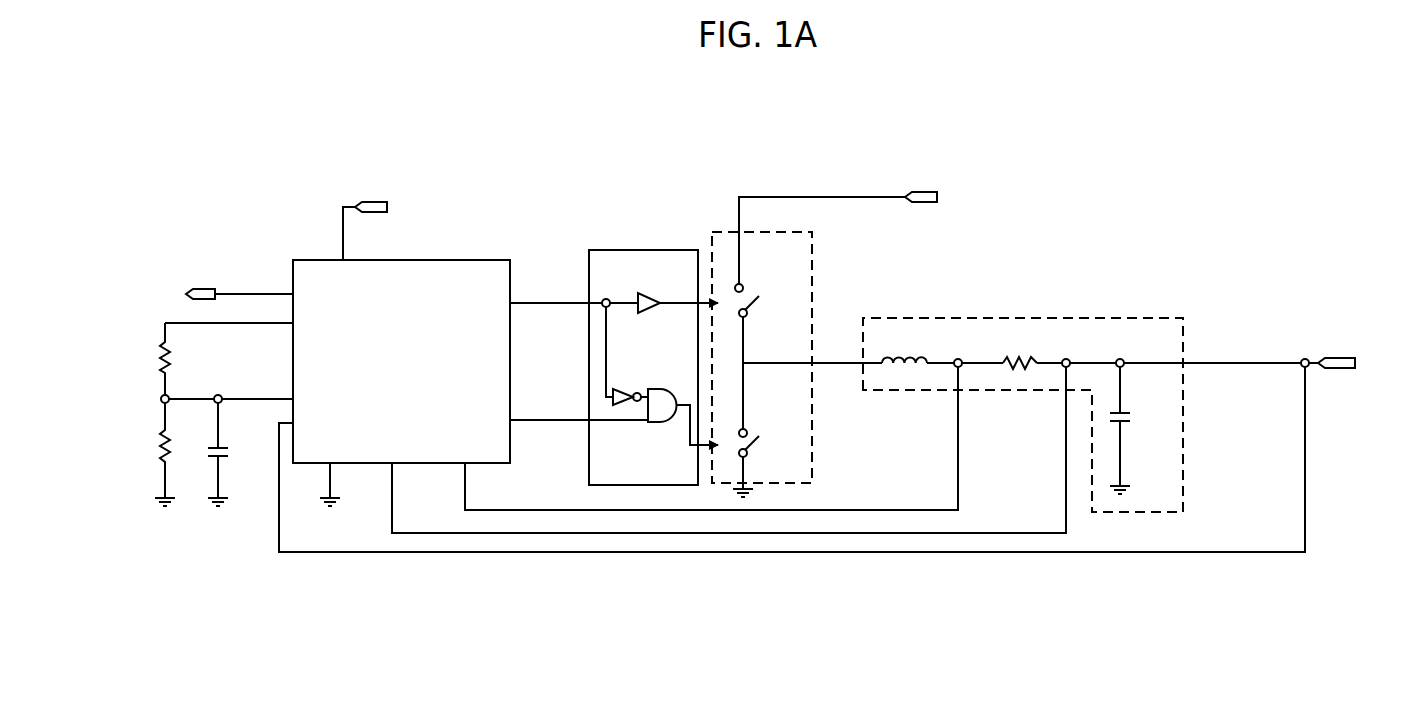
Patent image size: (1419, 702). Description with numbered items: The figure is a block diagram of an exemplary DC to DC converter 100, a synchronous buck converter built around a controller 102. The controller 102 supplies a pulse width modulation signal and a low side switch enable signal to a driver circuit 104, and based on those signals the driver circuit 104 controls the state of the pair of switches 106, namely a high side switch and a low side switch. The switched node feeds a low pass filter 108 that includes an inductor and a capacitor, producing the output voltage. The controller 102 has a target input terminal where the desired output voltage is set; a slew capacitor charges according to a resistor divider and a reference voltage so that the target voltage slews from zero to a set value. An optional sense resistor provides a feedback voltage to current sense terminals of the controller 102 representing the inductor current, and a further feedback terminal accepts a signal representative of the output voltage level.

The DC to DC converter 100 is at (247, 200).
The controller 102 is at (463, 260).
The driver circuit 104 is at (641, 250).
The pair of switches 106 is at (812, 278).
The low pass filter 108 is at (1117, 318).